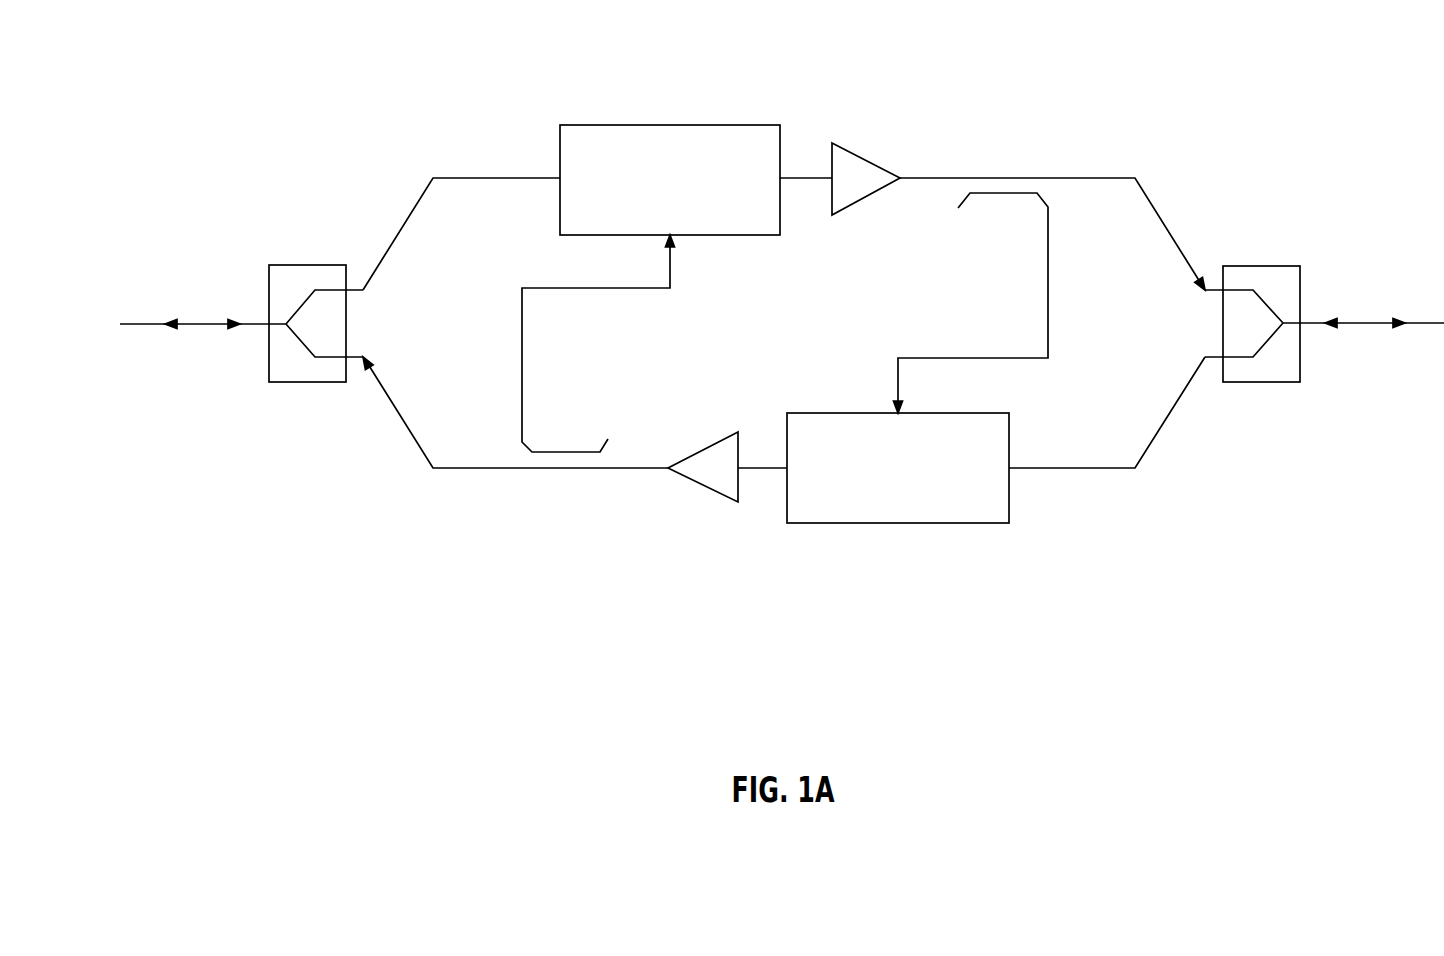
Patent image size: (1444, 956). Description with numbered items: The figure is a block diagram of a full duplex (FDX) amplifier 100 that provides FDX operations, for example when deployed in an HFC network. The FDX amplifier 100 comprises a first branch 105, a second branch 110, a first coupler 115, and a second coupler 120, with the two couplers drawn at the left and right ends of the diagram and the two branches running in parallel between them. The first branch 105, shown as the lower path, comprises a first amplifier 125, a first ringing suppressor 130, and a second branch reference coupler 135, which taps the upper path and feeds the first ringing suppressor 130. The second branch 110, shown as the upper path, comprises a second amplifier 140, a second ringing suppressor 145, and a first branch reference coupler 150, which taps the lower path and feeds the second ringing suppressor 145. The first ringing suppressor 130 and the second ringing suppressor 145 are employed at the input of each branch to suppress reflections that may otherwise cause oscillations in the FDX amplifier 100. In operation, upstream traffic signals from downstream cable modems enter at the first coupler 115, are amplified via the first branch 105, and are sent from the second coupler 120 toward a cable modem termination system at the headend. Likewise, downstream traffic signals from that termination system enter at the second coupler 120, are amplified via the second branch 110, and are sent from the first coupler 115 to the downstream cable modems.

The full duplex (FDX) amplifier 100 is at (1185, 99).
The first branch 105 is at (1185, 534).
The second branch 110 is at (392, 98).
The first coupler 115 is at (1277, 266).
The second coupler 120 is at (290, 265).
The first amplifier 125 is at (707, 448).
The first ringing suppressor 130 is at (987, 413).
The second branch reference coupler 135 is at (1048, 285).
The second amplifier 140 is at (866, 160).
The second ringing suppressor 145 is at (593, 125).
The first branch reference coupler 150 is at (522, 365).